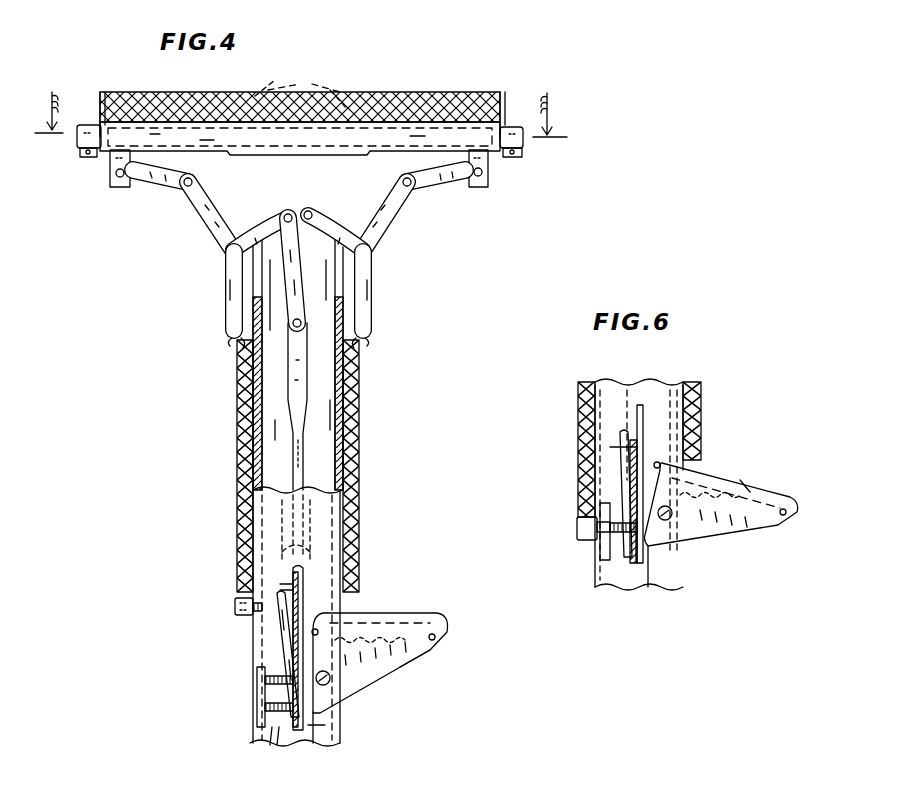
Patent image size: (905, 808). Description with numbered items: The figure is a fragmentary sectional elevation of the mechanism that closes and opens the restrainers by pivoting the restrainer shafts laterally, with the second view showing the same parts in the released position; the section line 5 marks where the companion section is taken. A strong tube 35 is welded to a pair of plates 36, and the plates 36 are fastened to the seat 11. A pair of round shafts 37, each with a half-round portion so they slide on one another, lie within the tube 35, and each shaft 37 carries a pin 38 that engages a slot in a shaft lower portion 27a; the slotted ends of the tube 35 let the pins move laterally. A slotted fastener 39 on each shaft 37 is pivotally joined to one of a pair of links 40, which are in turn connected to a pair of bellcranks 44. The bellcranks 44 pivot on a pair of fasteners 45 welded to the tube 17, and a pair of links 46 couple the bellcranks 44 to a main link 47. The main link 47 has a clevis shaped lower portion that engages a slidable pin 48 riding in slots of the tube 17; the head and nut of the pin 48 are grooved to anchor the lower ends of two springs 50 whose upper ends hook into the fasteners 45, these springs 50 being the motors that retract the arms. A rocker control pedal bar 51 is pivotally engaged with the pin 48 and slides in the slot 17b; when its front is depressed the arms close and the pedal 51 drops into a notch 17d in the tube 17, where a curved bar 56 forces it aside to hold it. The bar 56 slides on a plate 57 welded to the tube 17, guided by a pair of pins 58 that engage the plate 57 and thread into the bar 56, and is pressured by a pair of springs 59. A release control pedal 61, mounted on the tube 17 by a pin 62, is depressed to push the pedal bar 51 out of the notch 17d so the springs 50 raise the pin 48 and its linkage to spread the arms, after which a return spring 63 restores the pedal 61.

In FIG. 4, the section line 5- 5 is at (298, 114).
In FIG. 4, the seat 11 is at (383, 102).
In FIG. 4, the tube 17 is at (330, 727).
In FIG. 6, the tube 17 is at (617, 388).
In FIG. 4, the slot 17b is at (293, 575).
In FIG. 6, the slot 17b is at (643, 405).
In FIG. 4, the notch 17d is at (312, 725).
In FIG. 6, the notch 17d is at (648, 553).
In FIG. 4, the shaft lower portion 27a is at (78, 152).
In FIG. 4, the tube 35 is at (400, 130).
In FIG. 4, the plates 36 is at (100, 92).
In FIG. 4, the round shafts 37 is at (301, 86).
In FIG. 4, the pin 38 is at (87, 157).
In FIG. 4, the slotted fastener 39 is at (120, 188).
In FIG. 4, the links 40 is at (167, 187).
In FIG. 4, the bellcranks 44 is at (223, 223).
In FIG. 4, the fasteners 45 is at (227, 317).
In FIG. 4, the links 46 is at (297, 288).
In FIG. 4, the main link 47 is at (295, 395).
In FIG. 4, the slidable pin 48 is at (250, 618).
In FIG. 6, the slidable pin 48 is at (578, 528).
In FIG. 4, the springs 50 is at (240, 497).
In FIG. 6, the springs 50 is at (585, 410).
In FIG. 4, the rocker control pedal bar 51 is at (293, 590).
In FIG. 6, the rocker control pedal bar 51 is at (640, 560).
In FIG. 4, the curved bar 56 is at (283, 637).
In FIG. 6, the curved bar 56 is at (620, 445).
In FIG. 4, the plate 57 is at (260, 722).
In FIG. 6, the plate 57 is at (605, 563).
In FIG. 4, the pins 58 is at (257, 707).
In FIG. 4, the springs 59 is at (277, 728).
In FIG. 4, the release control pedal 61 is at (398, 620).
In FIG. 6, the release control pedal 61 is at (770, 487).
In FIG. 4, the pin 62 is at (330, 685).
In FIG. 6, the pin 62 is at (667, 517).
In FIG. 4, the return spring 63 is at (413, 650).
In FIG. 6, the return spring 63 is at (728, 470).